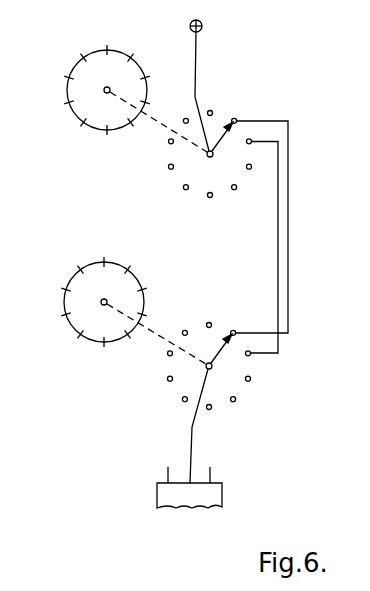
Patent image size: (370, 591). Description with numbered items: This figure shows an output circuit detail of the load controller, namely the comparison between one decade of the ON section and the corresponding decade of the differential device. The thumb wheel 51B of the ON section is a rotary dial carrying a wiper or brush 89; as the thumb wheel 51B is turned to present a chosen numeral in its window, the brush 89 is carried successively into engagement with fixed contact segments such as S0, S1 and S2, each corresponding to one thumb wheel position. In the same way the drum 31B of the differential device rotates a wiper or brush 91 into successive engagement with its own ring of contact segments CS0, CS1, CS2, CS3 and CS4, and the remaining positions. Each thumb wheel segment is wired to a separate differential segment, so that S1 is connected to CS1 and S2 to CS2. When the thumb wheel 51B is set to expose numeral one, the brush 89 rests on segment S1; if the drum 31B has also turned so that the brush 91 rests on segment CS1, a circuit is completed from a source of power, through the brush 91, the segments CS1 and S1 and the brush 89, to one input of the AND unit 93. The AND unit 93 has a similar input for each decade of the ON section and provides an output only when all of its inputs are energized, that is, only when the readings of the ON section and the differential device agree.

The drum 31B is at (72, 113).
The thumb wheel 51B is at (70, 326).
The wiper or brush 91 is at (221, 139).
The wiper or brush 89 is at (223, 355).
The AND unit 93 is at (157, 497).
The contact segment CS0 is at (213, 106).
The contact segment CS1 is at (260, 219).
The contact segment CS2 is at (263, 239).
The contact segment CS3 is at (258, 177).
The contact segment CS4 is at (241, 197).
The contact segment S0 is at (207, 316).
The contact segment S1 is at (240, 325).
The contact segment S2 is at (256, 345).